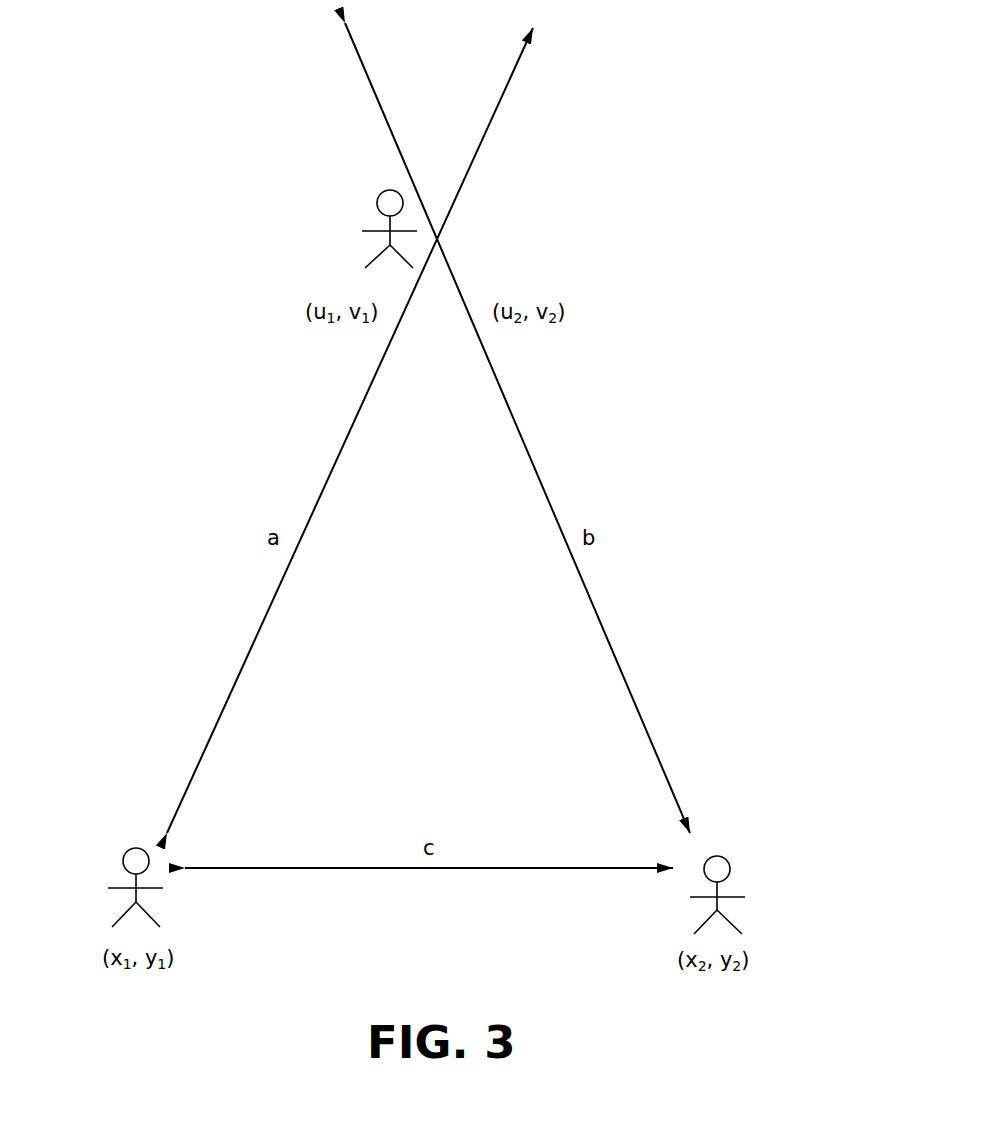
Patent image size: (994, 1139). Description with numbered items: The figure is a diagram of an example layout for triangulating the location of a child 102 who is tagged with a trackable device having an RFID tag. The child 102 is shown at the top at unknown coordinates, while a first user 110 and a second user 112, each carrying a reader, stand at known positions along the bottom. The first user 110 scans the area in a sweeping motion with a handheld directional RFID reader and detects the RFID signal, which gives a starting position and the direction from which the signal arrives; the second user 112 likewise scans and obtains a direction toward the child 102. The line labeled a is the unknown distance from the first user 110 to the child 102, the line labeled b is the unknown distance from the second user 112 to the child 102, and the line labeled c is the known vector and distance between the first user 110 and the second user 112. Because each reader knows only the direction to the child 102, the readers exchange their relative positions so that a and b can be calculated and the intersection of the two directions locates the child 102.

The child 102 is at (360, 216).
The first user 110 is at (110, 882).
The second user 112 is at (723, 851).